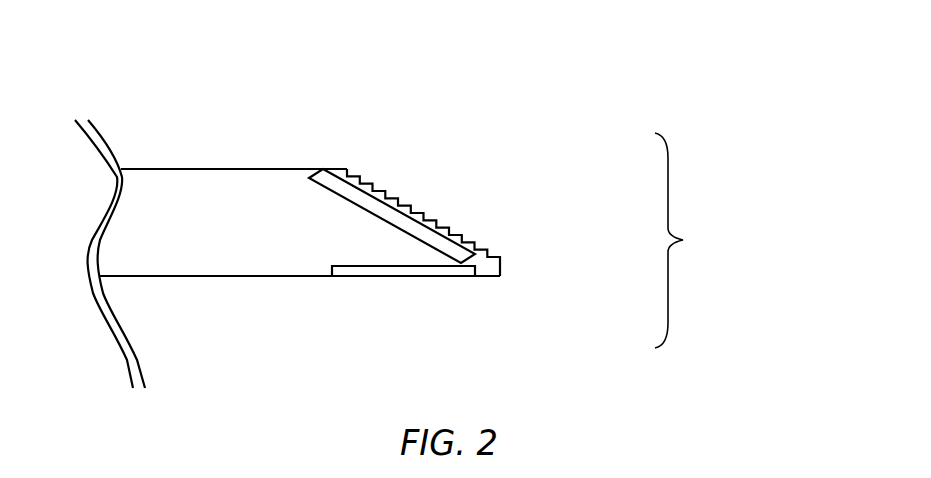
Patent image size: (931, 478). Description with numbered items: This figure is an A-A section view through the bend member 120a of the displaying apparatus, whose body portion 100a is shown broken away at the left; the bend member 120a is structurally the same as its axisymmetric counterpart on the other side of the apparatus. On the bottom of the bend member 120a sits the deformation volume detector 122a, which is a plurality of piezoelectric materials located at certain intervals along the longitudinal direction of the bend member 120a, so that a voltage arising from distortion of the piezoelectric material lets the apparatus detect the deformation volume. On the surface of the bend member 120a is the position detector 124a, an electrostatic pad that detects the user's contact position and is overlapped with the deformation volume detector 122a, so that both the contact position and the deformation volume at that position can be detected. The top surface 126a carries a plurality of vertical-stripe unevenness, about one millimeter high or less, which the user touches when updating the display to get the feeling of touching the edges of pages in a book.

The sheet body / holding member 100a is at (175, 168).
The bend member 120a is at (747, 240).
The deformation volume detector 122a is at (437, 270).
The position detector 124a is at (428, 236).
The top surface 126a is at (357, 176).